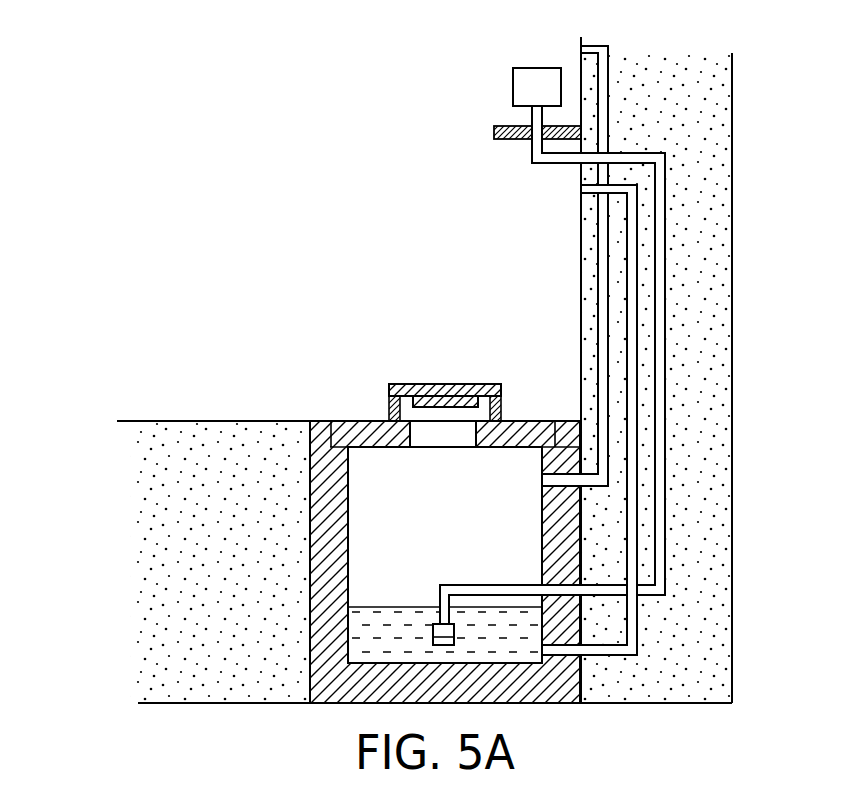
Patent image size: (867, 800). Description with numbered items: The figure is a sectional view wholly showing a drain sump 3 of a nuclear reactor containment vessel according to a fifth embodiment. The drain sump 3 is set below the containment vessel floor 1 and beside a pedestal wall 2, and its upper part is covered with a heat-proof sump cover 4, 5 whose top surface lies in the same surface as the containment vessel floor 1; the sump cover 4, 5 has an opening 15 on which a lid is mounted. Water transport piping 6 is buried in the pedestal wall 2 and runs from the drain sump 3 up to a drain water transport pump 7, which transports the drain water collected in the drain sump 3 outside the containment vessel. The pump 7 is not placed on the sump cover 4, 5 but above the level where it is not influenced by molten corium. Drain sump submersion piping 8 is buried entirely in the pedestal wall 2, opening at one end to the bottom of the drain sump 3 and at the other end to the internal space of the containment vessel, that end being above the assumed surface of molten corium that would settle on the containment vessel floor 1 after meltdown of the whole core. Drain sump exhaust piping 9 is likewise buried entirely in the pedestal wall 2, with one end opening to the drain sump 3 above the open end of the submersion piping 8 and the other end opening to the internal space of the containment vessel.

The containment vessel floor 1 is at (148, 473).
The pedestal wall 2 is at (725, 397).
The drain sump 3 is at (397, 497).
The sump cover 4 is at (381, 421).
The sump cover (fifth embodiment subscript) 5 is at (442, 387).
The water transport piping 6 is at (667, 339).
The drain water transport pump 7 is at (531, 70).
The drain sump submersion piping 8 is at (633, 640).
The drain sump exhaust piping 9 is at (608, 46).
The opening 15 is at (443, 440).